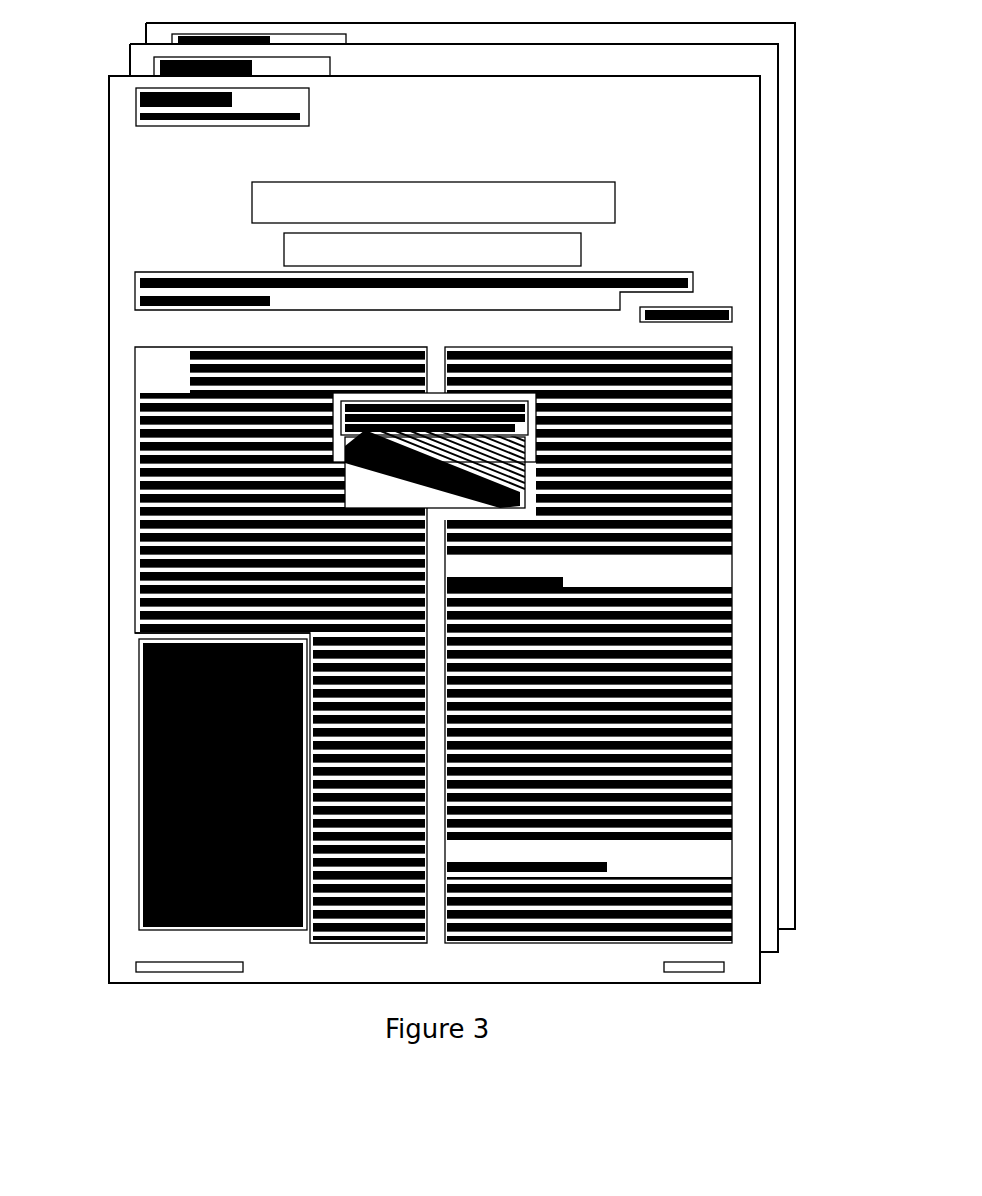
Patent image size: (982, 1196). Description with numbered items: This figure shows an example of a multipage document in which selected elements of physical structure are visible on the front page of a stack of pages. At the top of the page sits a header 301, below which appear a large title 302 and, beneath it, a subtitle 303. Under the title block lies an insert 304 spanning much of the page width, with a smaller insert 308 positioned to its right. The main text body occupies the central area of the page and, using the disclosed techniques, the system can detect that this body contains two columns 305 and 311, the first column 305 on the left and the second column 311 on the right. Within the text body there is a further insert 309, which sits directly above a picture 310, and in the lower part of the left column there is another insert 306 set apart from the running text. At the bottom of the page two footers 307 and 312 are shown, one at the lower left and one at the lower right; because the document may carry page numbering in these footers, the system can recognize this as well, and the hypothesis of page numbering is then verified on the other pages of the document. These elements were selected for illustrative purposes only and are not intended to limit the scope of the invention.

The header 301 is at (165, 92).
The title 302 is at (397, 180).
The subheadline text block 303 is at (284, 247).
The insert 304 is at (220, 305).
The column 305 is at (140, 440).
The insert 306 is at (137, 707).
The footer 307 is at (137, 957).
The insert 308 is at (717, 307).
The insert 309 is at (502, 398).
The picture 310 is at (523, 430).
The column 311 is at (735, 578).
The footer 312 is at (725, 958).